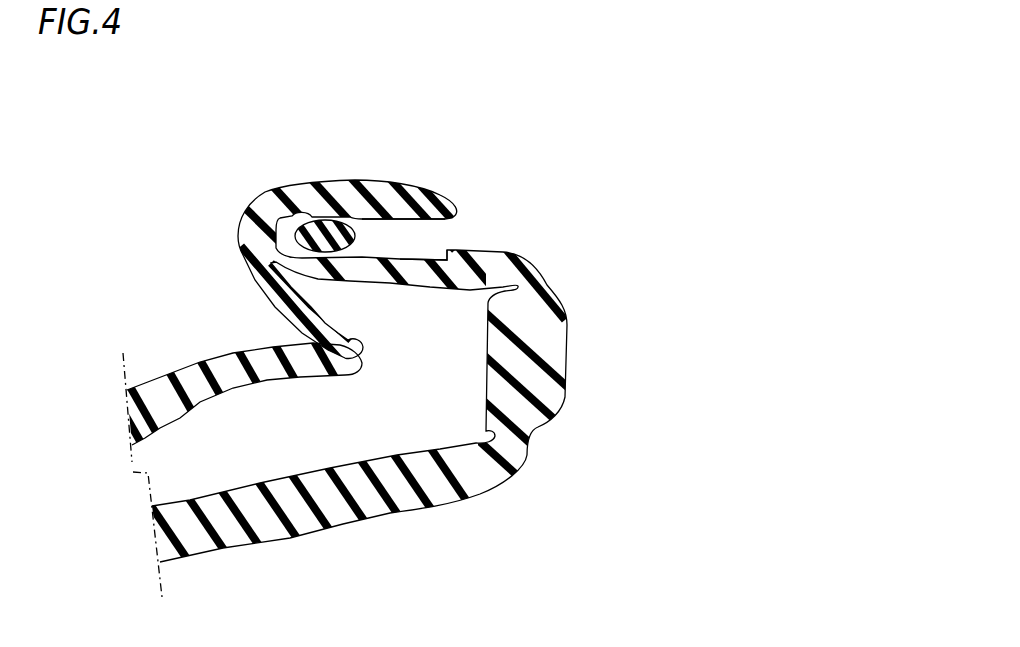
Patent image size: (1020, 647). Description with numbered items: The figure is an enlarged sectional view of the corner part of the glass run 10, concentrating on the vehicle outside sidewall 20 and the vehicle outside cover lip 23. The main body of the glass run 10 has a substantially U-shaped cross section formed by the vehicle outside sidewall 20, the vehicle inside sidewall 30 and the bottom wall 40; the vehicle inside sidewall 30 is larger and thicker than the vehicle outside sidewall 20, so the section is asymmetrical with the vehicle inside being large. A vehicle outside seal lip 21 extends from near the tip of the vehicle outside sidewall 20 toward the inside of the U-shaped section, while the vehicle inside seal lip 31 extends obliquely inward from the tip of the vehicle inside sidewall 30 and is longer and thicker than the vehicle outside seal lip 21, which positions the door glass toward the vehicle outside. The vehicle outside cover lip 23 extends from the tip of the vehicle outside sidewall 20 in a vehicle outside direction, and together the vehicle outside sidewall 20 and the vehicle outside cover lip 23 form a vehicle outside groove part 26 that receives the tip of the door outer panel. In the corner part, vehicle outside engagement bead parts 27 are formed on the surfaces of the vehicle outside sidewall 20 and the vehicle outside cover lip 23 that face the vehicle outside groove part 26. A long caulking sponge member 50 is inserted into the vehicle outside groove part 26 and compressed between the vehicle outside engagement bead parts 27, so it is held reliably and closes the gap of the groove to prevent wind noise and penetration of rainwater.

The glass run 10 is at (572, 232).
The vehicle outside sidewall 20 is at (393, 284).
The vehicle outside seal lip 21 is at (290, 318).
The vehicle outside cover lip 23 is at (411, 220).
The vehicle outside groove part 26 is at (413, 240).
The vehicle outside engagement bead part 27 is at (268, 200).
The vehicle inside sidewall 30 is at (380, 513).
The vehicle inside seal lip 31 is at (246, 352).
The bottom wall 40 is at (545, 370).
The caulking sponge member 50 is at (318, 220).